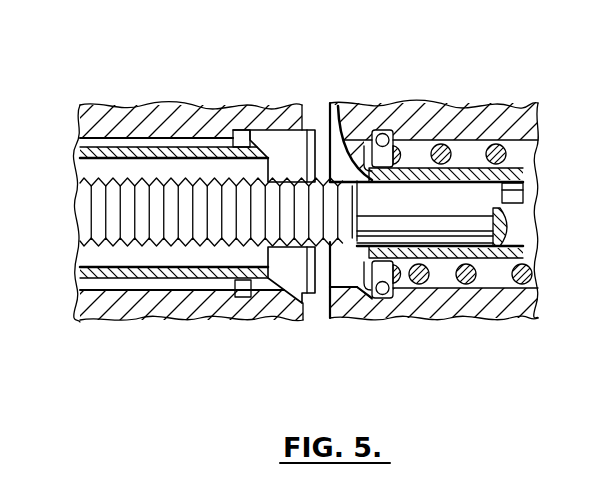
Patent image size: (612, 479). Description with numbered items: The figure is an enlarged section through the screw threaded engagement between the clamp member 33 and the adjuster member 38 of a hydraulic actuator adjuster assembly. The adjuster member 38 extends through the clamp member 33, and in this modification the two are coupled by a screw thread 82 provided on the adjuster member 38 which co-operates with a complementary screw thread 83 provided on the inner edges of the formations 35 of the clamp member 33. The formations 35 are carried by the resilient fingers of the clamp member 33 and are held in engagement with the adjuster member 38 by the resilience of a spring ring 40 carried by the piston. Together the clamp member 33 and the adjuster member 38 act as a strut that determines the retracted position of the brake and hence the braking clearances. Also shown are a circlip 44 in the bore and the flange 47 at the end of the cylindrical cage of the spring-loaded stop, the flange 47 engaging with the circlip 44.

The clamp member 33 is at (191, 283).
The formations 35 is at (288, 153).
The adjuster member 38 is at (445, 212).
The spring ring 40 is at (240, 129).
The circlip 44 is at (383, 301).
The flange 47 is at (340, 108).
The screw thread 82 is at (304, 298).
The screw thread 83 is at (108, 207).